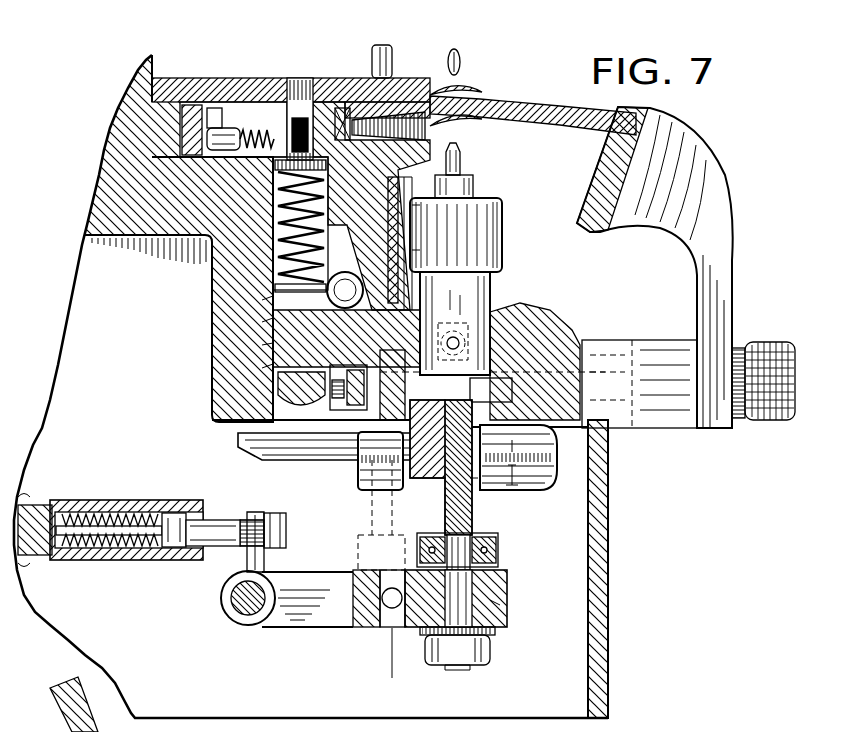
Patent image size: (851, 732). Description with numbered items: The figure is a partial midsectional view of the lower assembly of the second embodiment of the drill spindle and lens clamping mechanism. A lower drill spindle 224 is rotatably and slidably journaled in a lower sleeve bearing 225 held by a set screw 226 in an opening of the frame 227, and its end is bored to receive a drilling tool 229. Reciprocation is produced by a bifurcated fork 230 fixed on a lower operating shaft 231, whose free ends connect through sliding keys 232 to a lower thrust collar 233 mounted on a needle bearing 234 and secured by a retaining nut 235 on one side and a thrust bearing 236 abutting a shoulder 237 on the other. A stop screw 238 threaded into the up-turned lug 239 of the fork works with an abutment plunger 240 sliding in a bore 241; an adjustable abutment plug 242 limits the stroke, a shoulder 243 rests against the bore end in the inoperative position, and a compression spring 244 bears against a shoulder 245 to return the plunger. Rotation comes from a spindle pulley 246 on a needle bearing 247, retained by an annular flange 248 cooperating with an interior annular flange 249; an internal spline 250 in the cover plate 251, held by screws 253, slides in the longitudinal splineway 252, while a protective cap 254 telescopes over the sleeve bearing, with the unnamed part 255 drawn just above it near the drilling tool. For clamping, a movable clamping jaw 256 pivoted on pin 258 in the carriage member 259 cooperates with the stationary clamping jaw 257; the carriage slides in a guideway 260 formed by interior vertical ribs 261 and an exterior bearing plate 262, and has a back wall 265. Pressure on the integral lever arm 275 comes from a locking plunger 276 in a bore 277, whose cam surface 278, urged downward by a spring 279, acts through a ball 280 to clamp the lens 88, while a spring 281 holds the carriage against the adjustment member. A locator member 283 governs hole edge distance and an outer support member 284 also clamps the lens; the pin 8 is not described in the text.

The pin 8 is at (390, 46).
The lens 88 is at (560, 120).
The lower drill spindle 224 is at (378, 448).
The lower sleeve bearing 225 is at (492, 296).
The set screw 226 is at (470, 338).
The frame 227 is at (603, 462).
The drilling tool 229 is at (462, 155).
The bifurcated fork 230 is at (328, 628).
The lower operating shaft 231 is at (256, 610).
The sliding keys 232 is at (505, 592).
The lower thrust collar 233 is at (495, 613).
The needle bearing 234 is at (497, 631).
The retaining nut 235 is at (492, 652).
The thrust bearing 236 is at (500, 552).
The shoulder 237 is at (470, 530).
The stop screw 238 is at (246, 520).
The up-turned lug 239 is at (270, 559).
The abutment plunger 240 is at (226, 543).
The bore 241 is at (143, 514).
The adjustable abutment plug 242 is at (26, 503).
The shoulder 243 is at (184, 549).
The compression spring 244 is at (95, 549).
The shoulder 245 is at (140, 549).
The spindle pulley 246 is at (567, 472).
The needle bearing 247 is at (400, 490).
The annular flange 248 is at (491, 390).
The interior annular flange 249 is at (452, 340).
The internal spline 250 is at (472, 482).
The cover plate 251 is at (541, 480).
The longitudinal splineway 252 is at (458, 528).
The screws 253 is at (521, 485).
The protective cap 254 is at (499, 217).
The cap 255 is at (477, 190).
The movable clamping jaw 256 is at (478, 122).
The stationary clamping jaw 257 is at (482, 91).
The pivot pin 258 is at (296, 125).
The carriage member 259 is at (276, 186).
The guideway 260 is at (383, 262).
The interior vertical ribs 261 is at (326, 292).
The exterior bearing plate 262 is at (396, 213).
The back wall 265 is at (265, 240).
The lever arm 275 is at (362, 268).
The locking plunger 276 is at (300, 352).
The bore 277 is at (272, 421).
The cam surface 278 is at (300, 310).
The spring 279 is at (290, 292).
The ball 280 is at (276, 347).
The spring 281 is at (344, 108).
The locator member 283 is at (400, 108).
The outer support member 284 is at (677, 220).